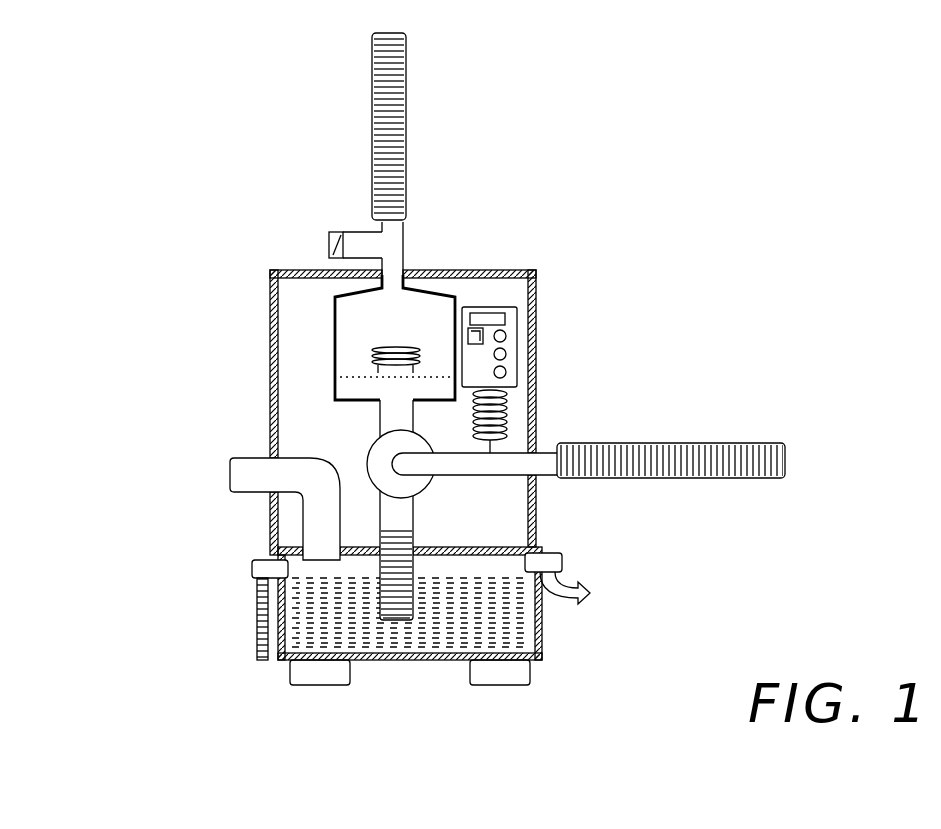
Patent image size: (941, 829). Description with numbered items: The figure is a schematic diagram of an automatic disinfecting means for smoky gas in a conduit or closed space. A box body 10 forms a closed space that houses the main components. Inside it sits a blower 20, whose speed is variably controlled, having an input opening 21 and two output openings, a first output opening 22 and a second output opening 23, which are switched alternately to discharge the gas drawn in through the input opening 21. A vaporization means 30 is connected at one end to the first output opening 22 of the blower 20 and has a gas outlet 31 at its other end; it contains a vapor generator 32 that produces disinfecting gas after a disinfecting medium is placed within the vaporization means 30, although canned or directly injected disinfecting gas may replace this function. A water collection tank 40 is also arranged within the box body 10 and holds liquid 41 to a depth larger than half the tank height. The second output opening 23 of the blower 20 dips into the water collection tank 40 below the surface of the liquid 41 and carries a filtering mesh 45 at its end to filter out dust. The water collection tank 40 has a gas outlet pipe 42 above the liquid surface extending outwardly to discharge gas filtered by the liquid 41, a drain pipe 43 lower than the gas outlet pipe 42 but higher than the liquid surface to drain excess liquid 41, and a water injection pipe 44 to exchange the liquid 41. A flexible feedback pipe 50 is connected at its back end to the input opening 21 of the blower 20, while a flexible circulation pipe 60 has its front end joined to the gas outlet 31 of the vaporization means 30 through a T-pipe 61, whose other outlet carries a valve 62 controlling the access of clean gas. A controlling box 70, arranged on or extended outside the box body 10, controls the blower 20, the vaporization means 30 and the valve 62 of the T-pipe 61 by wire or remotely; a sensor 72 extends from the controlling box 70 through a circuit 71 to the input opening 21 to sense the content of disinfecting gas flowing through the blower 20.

The box body 10 is at (533, 290).
The blower 20 is at (415, 487).
The input opening 21 is at (457, 463).
The first output opening 22 is at (395, 412).
The second output opening 23 is at (390, 525).
The vaporization means 30 is at (357, 310).
The gas outlet 31 is at (403, 270).
The vapor generator 32 is at (372, 357).
The water collection tank 40 is at (127, 592).
The liquid 41 is at (317, 612).
The gas outlet pipe 42 is at (320, 547).
The drain pipe 43 is at (263, 570).
The water injection pipe 44 is at (562, 565).
The filtering mesh 45 is at (405, 610).
The feedback pipe 50 is at (692, 477).
The circulation pipe 60 is at (409, 124).
The T-pipe 61 is at (350, 240).
The valve 62 is at (328, 232).
The controlling box 70 is at (518, 345).
The circuit 71 is at (508, 412).
The sensor 72 is at (505, 445).